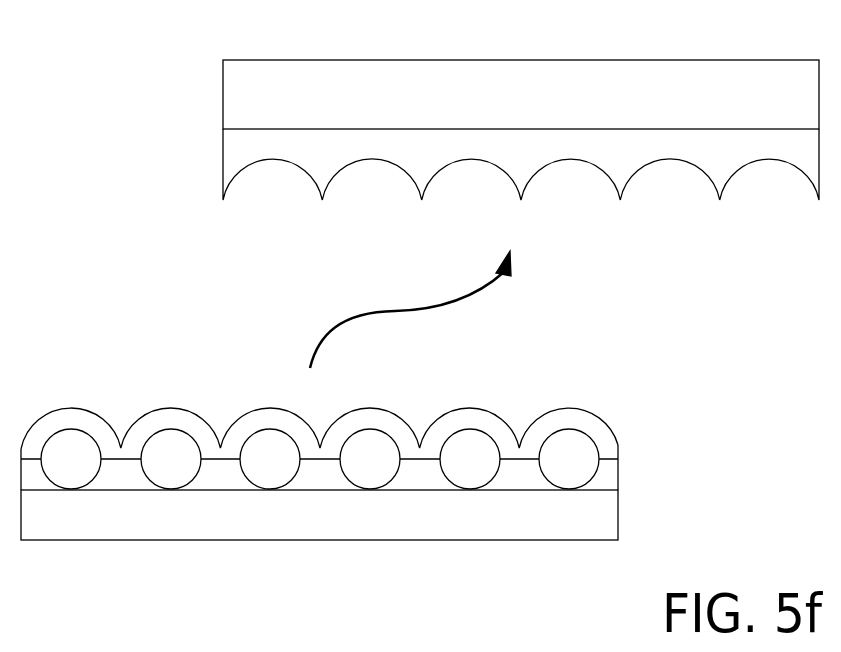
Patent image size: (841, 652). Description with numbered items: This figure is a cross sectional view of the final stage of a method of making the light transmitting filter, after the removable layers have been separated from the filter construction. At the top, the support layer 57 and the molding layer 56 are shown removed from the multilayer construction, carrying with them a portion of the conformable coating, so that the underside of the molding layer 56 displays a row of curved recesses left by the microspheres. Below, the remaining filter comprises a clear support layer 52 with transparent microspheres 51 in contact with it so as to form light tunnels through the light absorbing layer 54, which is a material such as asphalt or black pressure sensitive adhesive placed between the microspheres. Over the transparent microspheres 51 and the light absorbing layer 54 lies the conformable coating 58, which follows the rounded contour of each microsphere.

The transparent microspheres 51 is at (569, 458).
The clear support layer 52 is at (608, 520).
The light absorbing layer 54 is at (608, 475).
The molding layer 56 is at (237, 155).
The support layer 57 is at (243, 93).
The conformable coating 58 is at (603, 440).